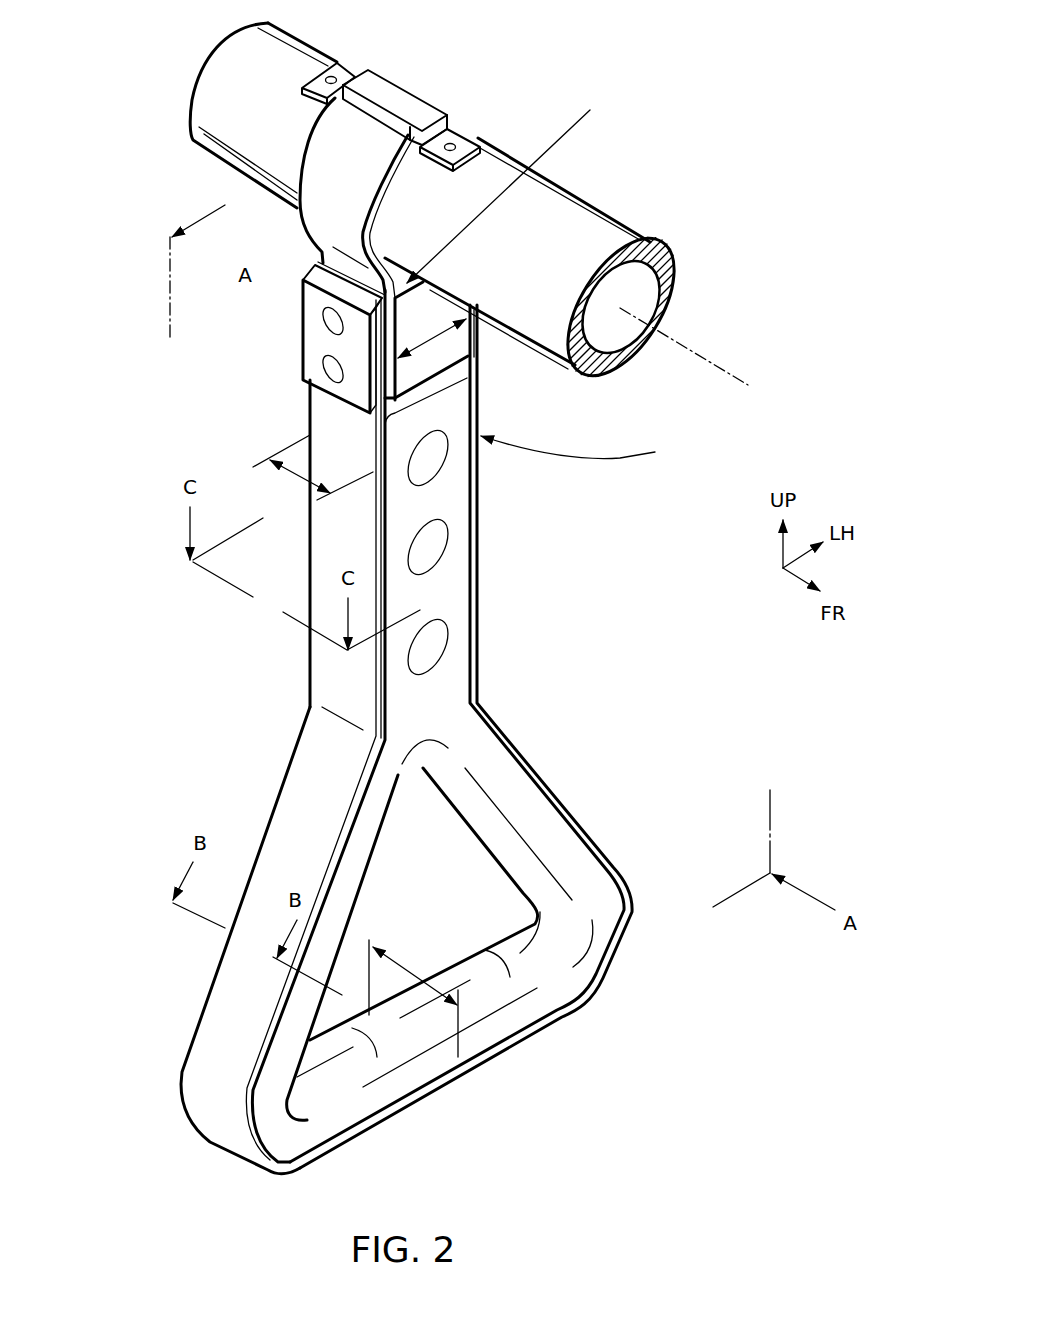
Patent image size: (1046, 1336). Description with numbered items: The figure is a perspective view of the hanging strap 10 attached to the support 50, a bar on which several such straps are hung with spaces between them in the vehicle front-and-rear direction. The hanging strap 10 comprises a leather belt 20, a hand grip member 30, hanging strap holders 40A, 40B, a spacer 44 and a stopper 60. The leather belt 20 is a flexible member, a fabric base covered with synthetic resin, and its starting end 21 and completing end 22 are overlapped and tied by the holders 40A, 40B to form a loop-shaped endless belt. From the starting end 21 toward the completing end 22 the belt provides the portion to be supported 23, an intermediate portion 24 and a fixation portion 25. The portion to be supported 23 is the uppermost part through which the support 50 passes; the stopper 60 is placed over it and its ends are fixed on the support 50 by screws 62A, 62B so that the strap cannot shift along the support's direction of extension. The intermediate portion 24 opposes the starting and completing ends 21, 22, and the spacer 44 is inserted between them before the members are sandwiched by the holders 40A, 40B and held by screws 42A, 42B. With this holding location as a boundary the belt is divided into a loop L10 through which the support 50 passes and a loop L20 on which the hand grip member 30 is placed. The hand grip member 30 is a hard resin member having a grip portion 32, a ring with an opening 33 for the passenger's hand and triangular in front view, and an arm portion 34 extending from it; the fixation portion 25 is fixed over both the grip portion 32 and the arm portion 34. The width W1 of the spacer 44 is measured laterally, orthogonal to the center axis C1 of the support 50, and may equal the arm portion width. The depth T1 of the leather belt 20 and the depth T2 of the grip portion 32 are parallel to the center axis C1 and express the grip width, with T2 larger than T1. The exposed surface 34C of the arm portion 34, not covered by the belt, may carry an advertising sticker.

The hanging strap 10 is at (150, 604).
The leather belt 20 is at (356, 633).
The starting end 21 is at (317, 262).
The completing end 22 is at (375, 407).
The portion to be supported 23 is at (335, 157).
The intermediate portion 24 is at (471, 353).
The fixation portion 25 is at (500, 727).
The hand grip member 30 is at (436, 940).
The grip portion 32 is at (553, 893).
The opening 33 is at (478, 828).
The arm portion 34 is at (497, 529).
The exposed surface 34C is at (447, 512).
The hanging strap holder 40A is at (278, 337).
The hanging strap holder 40B is at (500, 380).
The screw 42A is at (327, 320).
The screw 42B is at (328, 368).
The spacer 44 is at (438, 352).
The support 50 is at (594, 204).
The stopper 60 is at (424, 86).
The screw 62A is at (448, 142).
The screw 62B is at (333, 77).
The width of the spacer W1 is at (432, 334).
The depth of the leather belt T1 is at (313, 468).
The depth of the grip portion T2 is at (413, 998).
The loop L10 is at (505, 179).
The loop L20 is at (586, 450).
The center axis C1 is at (700, 356).